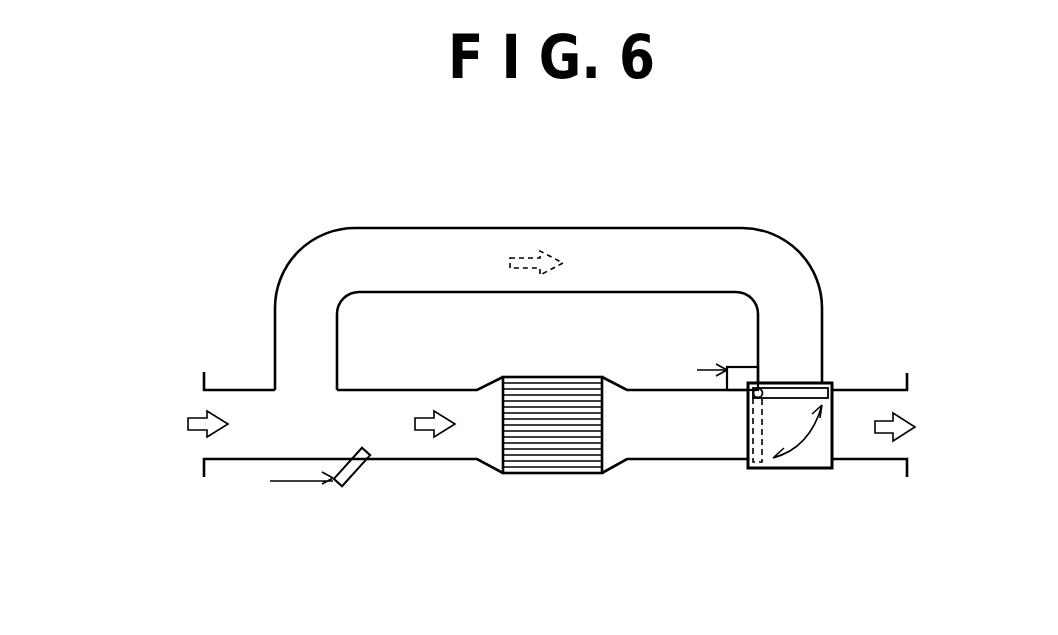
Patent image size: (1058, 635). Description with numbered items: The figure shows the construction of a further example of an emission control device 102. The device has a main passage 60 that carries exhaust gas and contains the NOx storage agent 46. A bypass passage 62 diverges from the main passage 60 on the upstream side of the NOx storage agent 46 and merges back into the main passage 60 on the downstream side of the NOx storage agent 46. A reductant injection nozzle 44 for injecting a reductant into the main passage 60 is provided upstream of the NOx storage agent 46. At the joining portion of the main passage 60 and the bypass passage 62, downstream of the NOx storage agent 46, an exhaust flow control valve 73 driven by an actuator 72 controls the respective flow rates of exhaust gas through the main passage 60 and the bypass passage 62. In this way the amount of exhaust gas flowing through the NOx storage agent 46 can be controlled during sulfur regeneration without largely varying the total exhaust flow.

The emission control device 102 is at (562, 255).
The bypass passage 62 is at (434, 248).
The main passage 60 is at (460, 398).
The NOx storage agent 46 is at (565, 389).
The actuator 72 is at (742, 367).
The exhaust flow control valve 73 is at (797, 388).
The reductant injection nozzle 44 is at (362, 468).